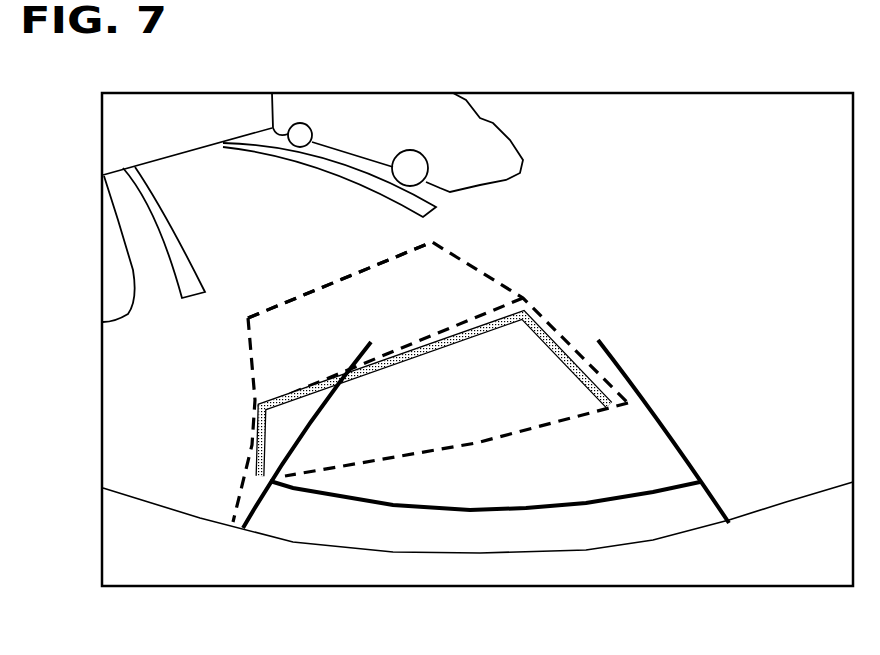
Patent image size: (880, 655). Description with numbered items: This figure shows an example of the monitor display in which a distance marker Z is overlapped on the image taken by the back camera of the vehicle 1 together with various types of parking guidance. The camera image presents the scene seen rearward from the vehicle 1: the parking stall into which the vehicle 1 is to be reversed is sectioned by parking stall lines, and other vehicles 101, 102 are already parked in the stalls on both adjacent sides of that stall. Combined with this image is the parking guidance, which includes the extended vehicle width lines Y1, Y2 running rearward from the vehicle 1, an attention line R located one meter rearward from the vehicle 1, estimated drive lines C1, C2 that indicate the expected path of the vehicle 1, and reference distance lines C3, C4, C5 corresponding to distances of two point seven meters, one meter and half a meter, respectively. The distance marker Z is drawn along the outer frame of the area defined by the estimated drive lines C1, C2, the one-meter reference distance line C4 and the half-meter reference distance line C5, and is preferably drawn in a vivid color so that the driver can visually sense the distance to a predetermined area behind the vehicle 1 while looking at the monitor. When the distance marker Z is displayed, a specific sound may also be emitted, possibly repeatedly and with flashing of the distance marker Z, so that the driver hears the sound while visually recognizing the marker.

The vehicle 1 is at (611, 573).
The other vehicle 101 is at (500, 133).
The other vehicle 102 is at (112, 270).
The estimated drive line C1 is at (473, 262).
The estimated drive line C2 is at (248, 373).
The reference distance line C3 is at (321, 283).
The reference distance line C4 is at (405, 348).
The reference distance line C5 is at (506, 436).
The distance marker Z is at (560, 337).
The extended vehicle width line Y1 is at (644, 388).
The extended vehicle width line Y2 is at (323, 413).
The attention line R is at (493, 508).